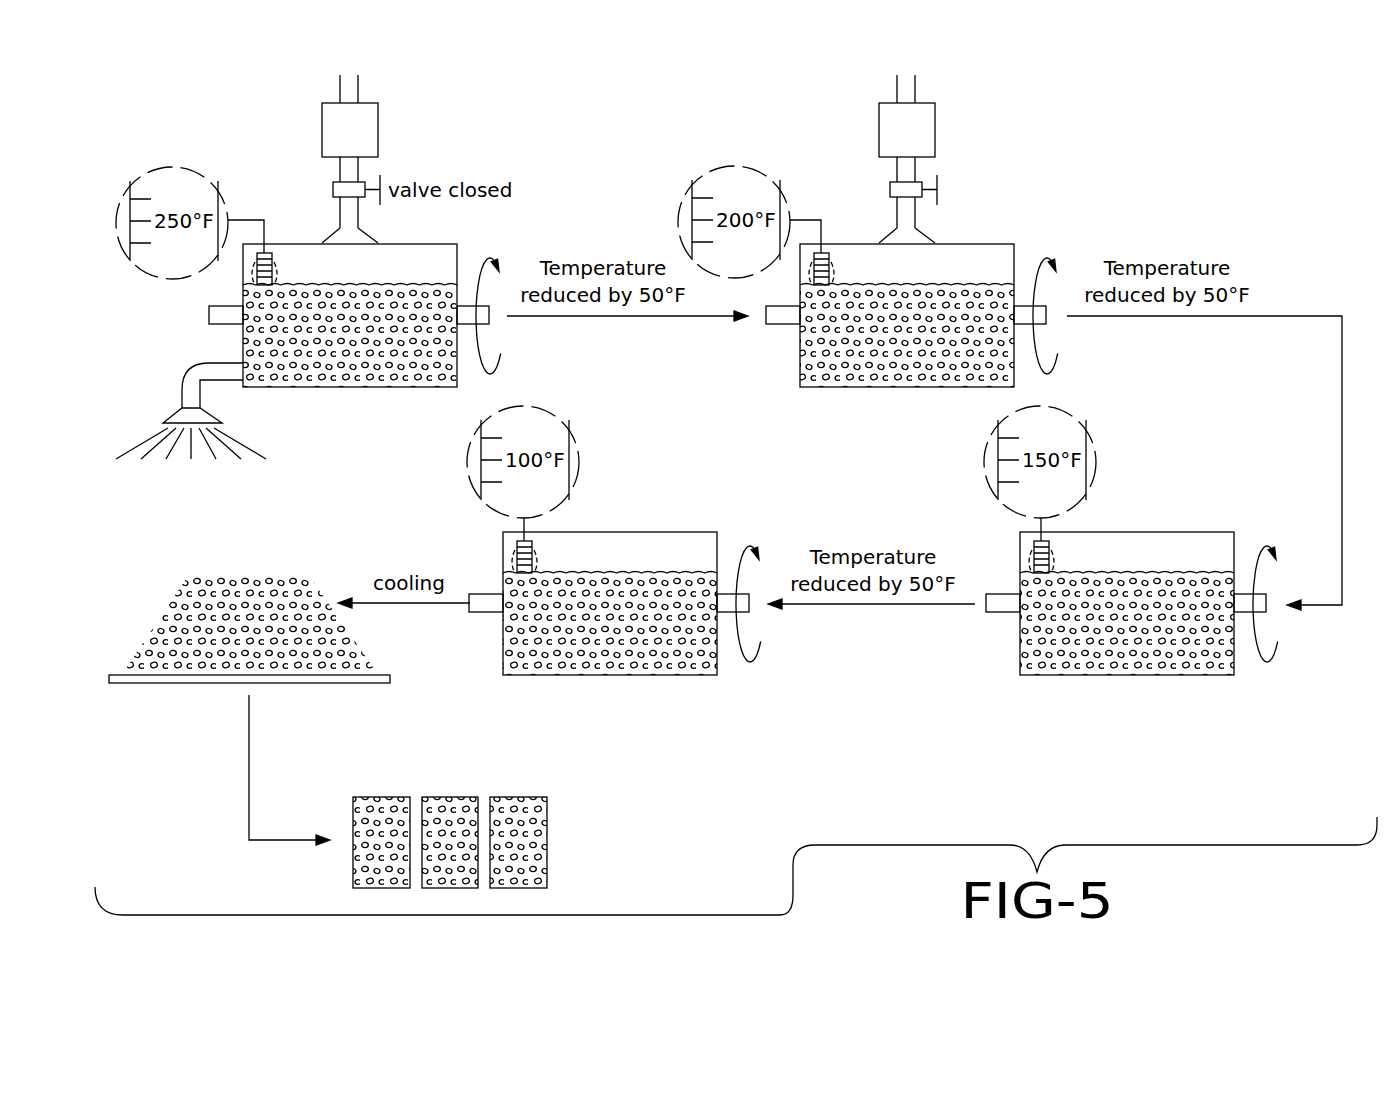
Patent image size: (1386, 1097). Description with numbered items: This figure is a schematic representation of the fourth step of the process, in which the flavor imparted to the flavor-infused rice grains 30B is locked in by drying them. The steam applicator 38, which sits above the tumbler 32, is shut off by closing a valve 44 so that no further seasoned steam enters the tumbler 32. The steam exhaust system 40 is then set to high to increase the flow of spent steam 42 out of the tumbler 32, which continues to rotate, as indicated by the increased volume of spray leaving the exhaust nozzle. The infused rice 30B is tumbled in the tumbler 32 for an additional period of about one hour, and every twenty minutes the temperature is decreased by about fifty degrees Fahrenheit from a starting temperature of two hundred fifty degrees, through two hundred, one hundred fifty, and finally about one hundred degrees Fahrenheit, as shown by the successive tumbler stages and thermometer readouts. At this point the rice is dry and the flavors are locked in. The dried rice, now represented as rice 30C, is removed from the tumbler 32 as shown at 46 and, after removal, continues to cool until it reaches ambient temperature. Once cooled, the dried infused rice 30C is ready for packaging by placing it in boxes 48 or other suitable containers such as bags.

The tumbler 32 is at (432, 243).
The flavor-infused rice grains 30B is at (343, 370).
The steam applicator 38 is at (322, 127).
The valve 44 is at (333, 188).
The steam exhaust system 40 is at (206, 363).
The spent steam 42 is at (142, 445).
The removal of dried rice from tumbler 46 is at (178, 569).
The dried infused rice 30C is at (313, 587).
The boxes 48 is at (380, 797).